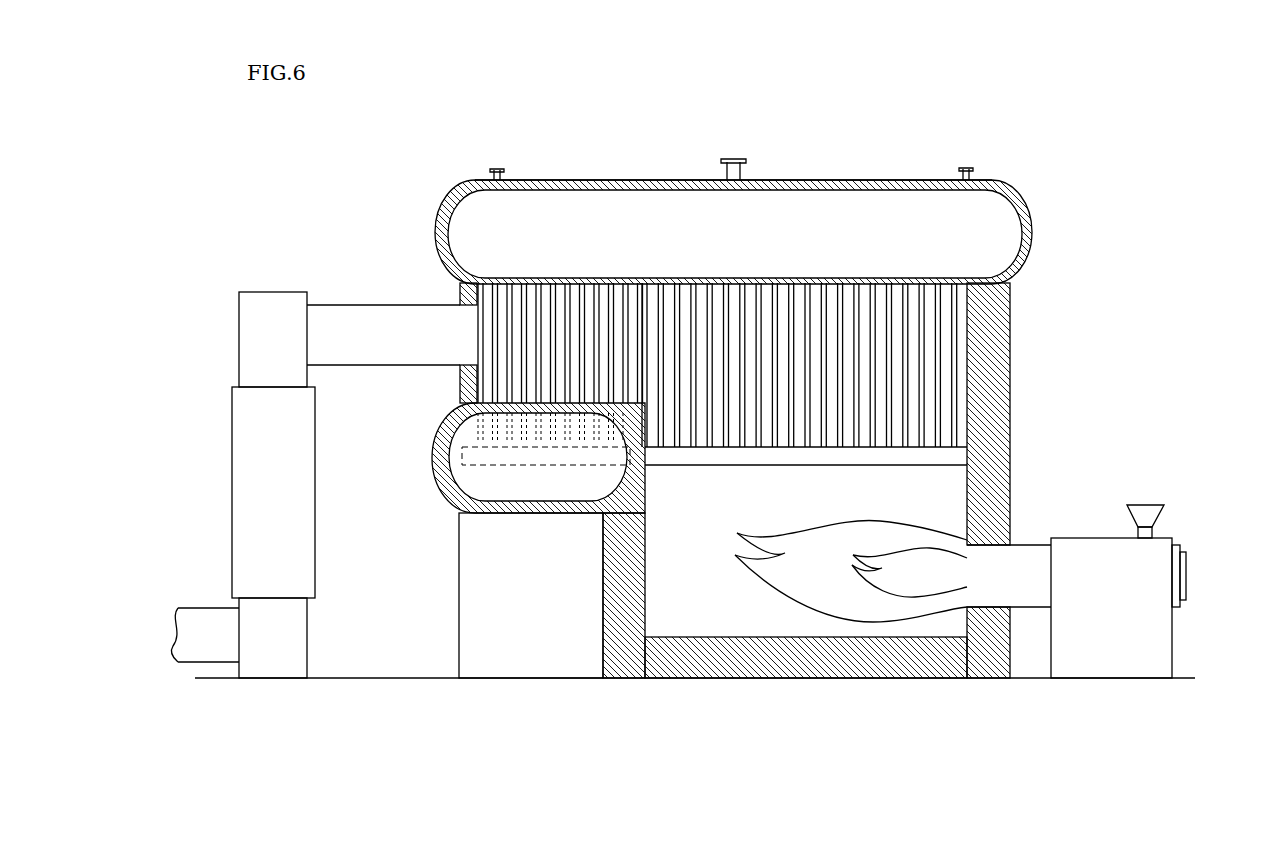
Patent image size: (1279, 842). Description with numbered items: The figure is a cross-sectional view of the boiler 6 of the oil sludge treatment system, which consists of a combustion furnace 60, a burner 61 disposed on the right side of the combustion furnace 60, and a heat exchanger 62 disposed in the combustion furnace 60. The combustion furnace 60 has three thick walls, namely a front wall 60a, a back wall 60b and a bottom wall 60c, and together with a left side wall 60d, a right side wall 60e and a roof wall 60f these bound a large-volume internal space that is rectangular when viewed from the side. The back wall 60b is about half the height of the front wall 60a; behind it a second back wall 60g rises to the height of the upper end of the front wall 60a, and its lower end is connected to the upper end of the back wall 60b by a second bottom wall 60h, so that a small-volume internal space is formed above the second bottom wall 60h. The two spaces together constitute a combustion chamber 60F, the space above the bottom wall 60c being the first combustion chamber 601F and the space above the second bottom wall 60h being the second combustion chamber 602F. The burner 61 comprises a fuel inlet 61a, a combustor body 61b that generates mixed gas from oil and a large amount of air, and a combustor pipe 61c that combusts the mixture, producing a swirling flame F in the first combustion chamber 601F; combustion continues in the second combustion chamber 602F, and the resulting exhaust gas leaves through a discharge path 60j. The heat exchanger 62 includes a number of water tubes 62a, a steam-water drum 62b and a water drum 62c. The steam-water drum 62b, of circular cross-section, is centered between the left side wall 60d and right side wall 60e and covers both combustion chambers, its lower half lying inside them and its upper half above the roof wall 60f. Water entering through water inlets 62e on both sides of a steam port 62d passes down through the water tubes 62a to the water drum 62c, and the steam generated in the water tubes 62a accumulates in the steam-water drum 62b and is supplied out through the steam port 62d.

The boiler 6 is at (692, 52).
The combustion furnace 60 is at (800, 523).
The front wall 60a is at (1010, 327).
The back wall 60b is at (603, 620).
The bottom wall 60c is at (806, 688).
The left side wall 60d is at (806, 688).
The right side wall 60e is at (806, 657).
The roof wall 60f is at (460, 183).
The second back wall 60g is at (460, 378).
The second bottom wall 60h is at (493, 515).
The discharge path 60j is at (355, 305).
The combustion chamber 60F is at (851, 557).
The swirling flame F is at (851, 571).
The burner 61 is at (1103, 594).
The fuel inlet 61a is at (1148, 503).
The combustor body 61b is at (1143, 655).
The combustor pipe 61c is at (1037, 597).
The heat exchanger 62 is at (786, 374).
The water tubes 62a is at (770, 374).
The steam-water drum 62b is at (1000, 220).
The water drum 62c is at (455, 475).
The steam port 62d is at (733, 159).
The water inlets 62e is at (497, 168).
The first combustion chamber 601F is at (935, 385).
The second combustion chamber 602F is at (552, 374).